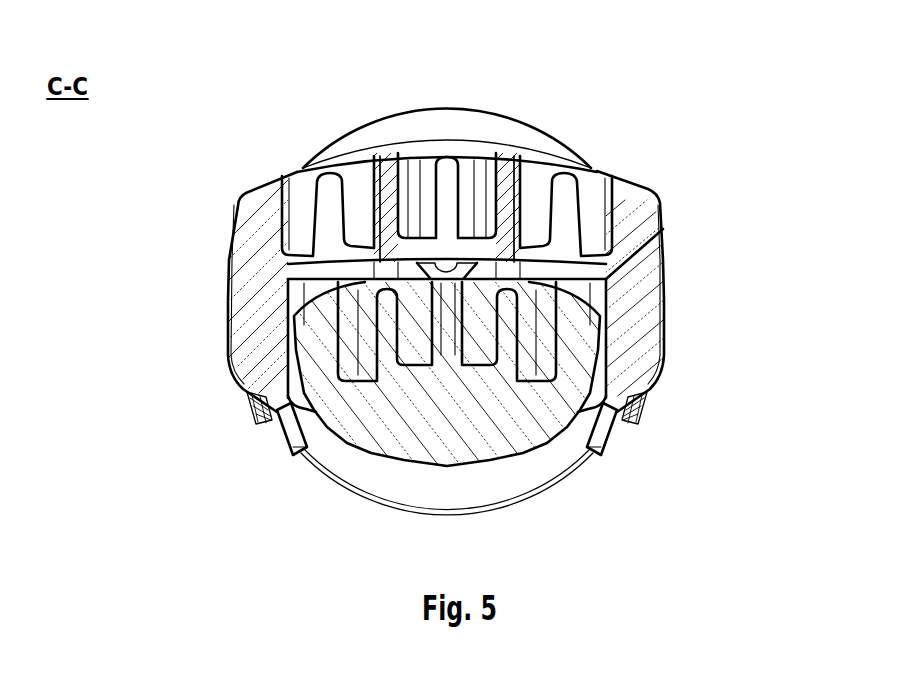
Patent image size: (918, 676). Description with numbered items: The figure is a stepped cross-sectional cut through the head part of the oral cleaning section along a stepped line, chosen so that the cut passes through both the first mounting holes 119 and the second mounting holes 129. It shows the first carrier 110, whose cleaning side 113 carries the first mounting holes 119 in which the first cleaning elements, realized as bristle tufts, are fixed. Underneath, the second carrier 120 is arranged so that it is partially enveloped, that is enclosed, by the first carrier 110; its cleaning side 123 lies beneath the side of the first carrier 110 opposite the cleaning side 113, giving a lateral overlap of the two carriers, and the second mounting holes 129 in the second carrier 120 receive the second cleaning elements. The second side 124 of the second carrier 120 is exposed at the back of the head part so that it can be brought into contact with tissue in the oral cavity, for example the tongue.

The first carrier 110 is at (640, 280).
The cleaning side 113 is at (265, 183).
The first mounting holes 119 is at (590, 190).
The second carrier 120 is at (407, 418).
The cleaning side 123 is at (573, 307).
The second side 124 is at (517, 480).
The second mounting holes 129 is at (340, 317).